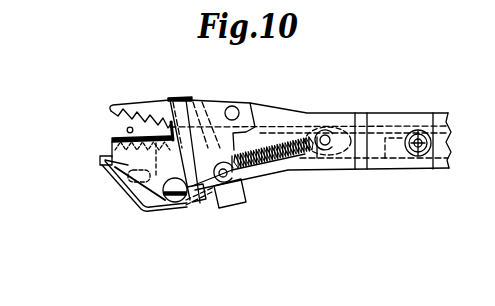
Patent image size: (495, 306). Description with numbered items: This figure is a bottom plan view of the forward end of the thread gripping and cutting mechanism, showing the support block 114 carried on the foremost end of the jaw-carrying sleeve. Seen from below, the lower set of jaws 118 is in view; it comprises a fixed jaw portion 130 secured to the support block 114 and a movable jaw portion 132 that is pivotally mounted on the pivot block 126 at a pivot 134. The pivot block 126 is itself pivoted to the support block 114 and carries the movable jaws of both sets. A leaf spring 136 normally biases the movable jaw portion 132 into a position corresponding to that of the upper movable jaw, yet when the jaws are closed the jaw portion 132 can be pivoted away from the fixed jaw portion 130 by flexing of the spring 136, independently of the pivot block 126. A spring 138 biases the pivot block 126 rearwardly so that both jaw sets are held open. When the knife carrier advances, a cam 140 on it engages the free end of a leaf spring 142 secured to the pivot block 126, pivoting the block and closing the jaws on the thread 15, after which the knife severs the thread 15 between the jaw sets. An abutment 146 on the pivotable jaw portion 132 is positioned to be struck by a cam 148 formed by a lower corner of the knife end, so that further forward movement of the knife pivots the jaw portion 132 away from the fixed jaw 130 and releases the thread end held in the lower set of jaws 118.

The support block 114 is at (307, 113).
The lower set of jaws 118 is at (110, 109).
The pivot block 126 is at (223, 210).
The fixed jaw portion 130 is at (128, 105).
The movable jaw portion 132 is at (107, 165).
The pivot 134 is at (176, 204).
The leaf spring 136 is at (139, 212).
The spring 138 is at (303, 172).
The cam 140 is at (377, 158).
The leaf spring 142 is at (240, 180).
The abutment 146 is at (128, 194).
The cam 148 is at (198, 102).
The thread 15 is at (127, 130).